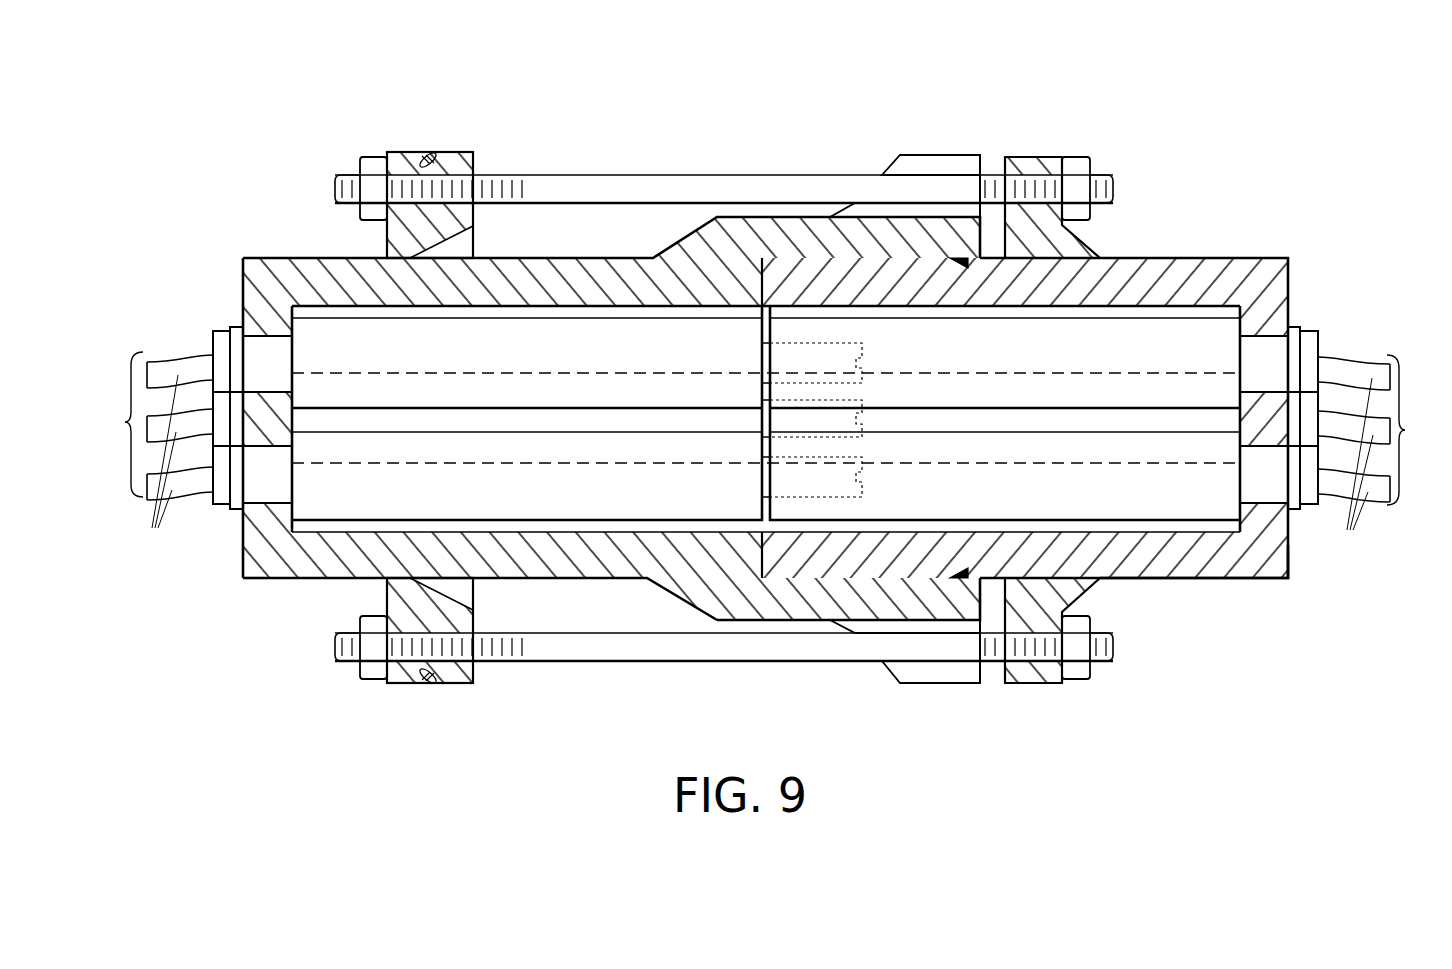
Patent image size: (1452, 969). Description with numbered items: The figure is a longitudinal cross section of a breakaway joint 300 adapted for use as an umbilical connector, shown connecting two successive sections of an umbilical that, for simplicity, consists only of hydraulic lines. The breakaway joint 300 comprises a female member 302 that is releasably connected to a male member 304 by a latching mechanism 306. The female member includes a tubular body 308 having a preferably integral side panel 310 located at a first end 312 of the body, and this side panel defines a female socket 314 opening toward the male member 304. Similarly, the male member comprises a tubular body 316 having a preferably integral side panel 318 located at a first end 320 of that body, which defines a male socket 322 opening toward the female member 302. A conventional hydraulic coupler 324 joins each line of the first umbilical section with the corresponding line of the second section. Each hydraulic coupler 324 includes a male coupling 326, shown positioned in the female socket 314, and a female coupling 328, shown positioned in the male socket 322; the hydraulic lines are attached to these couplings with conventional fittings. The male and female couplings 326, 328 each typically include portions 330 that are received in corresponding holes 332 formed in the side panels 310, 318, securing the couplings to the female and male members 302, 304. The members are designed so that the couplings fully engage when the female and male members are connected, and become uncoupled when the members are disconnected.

The breakaway joint 300 is at (1232, 118).
The female member 302 is at (273, 252).
The male member 304 is at (1200, 254).
The latching mechanism 306 is at (930, 150).
The tubular body 308 is at (541, 582).
The side panel 310 is at (243, 560).
The first end 312 is at (283, 578).
The female socket 314 is at (632, 528).
The tubular body 316 is at (1177, 582).
The side panel 318 is at (1292, 560).
The first end 320 is at (1257, 582).
The male socket 322 is at (1094, 528).
The hydraulic coupler 324 is at (566, 318).
The male coupling 326 is at (540, 333).
The female coupling 328 is at (1133, 330).
The portions 330 is at (228, 331).
The holes 332 is at (233, 330).